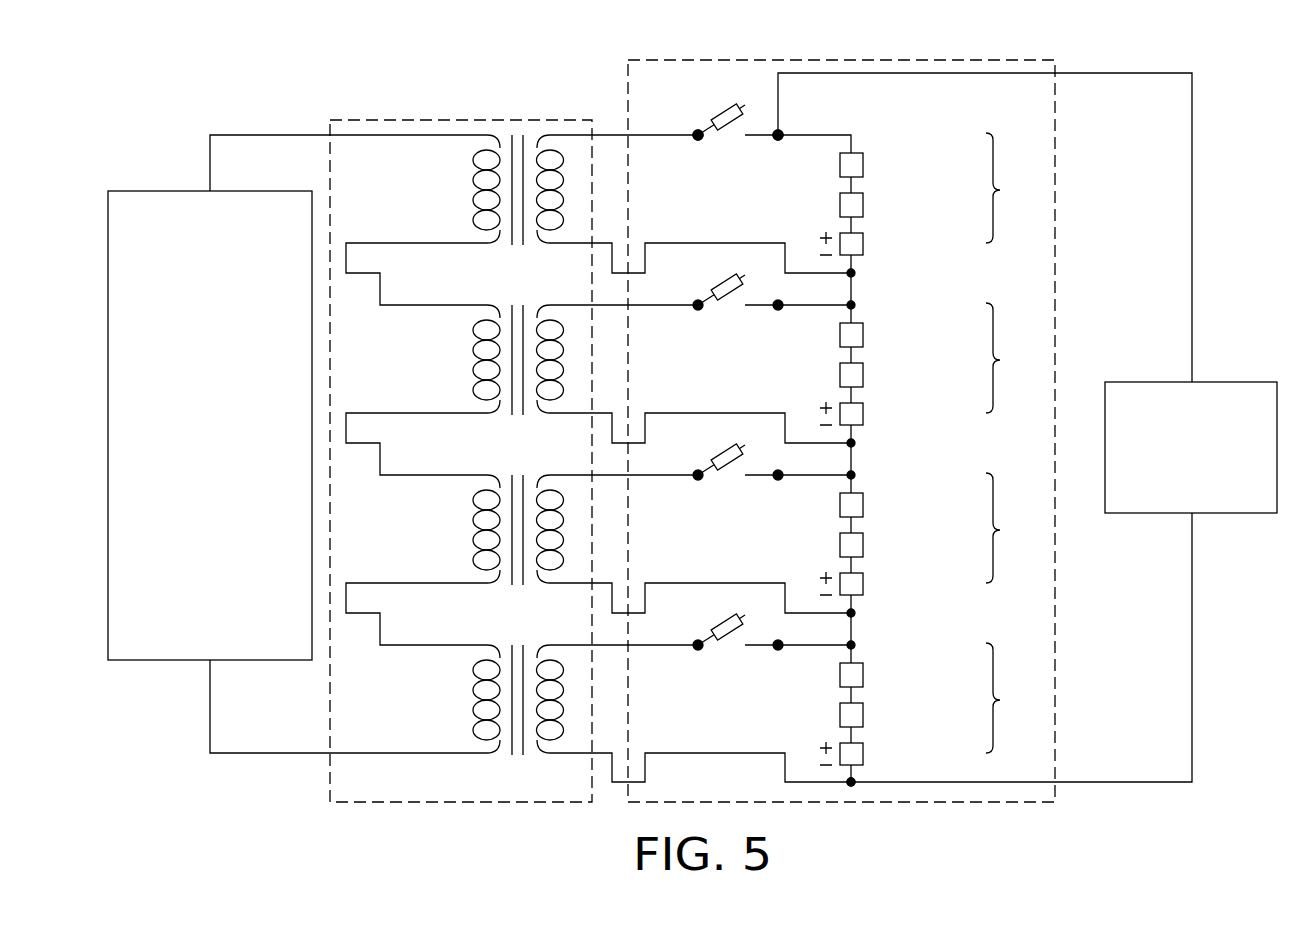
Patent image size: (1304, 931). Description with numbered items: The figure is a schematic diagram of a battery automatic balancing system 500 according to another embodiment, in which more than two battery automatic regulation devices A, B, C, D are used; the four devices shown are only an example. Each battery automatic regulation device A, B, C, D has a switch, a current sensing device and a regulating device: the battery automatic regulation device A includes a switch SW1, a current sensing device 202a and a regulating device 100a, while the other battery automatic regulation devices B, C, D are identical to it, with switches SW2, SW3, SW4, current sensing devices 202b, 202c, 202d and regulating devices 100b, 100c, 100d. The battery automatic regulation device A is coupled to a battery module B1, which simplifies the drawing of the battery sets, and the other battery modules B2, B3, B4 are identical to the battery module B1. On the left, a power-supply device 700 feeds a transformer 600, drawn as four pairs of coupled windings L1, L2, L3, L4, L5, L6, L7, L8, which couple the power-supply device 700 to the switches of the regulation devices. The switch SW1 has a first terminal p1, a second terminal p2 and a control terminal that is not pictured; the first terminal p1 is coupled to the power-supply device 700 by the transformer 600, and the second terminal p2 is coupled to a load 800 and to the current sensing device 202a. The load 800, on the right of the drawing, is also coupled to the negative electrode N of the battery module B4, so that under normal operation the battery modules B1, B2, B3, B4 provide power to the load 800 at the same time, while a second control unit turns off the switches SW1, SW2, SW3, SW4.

The power-supply device 700 is at (108, 193).
The load 800 is at (1105, 384).
The transformer 600 is at (330, 122).
The battery automatic balancing system 500 is at (628, 62).
The transformer winding L1 is at (481, 207).
The transformer winding L2 is at (555, 207).
The transformer winding L3 is at (481, 377).
The transformer winding L4 is at (555, 377).
The transformer winding L5 is at (481, 547).
The transformer winding L6 is at (555, 547).
The transformer winding L7 is at (481, 717).
The transformer winding L8 is at (555, 717).
The switch SW1 is at (730, 130).
The switch SW2 is at (730, 300).
The switch SW3 is at (730, 470).
The switch SW4 is at (730, 640).
The first terminal p1 is at (697, 130).
The second terminal p2 is at (780, 132).
The current sensing device 202a is at (863, 165).
The current sensing device 202b is at (863, 335).
The current sensing device 202c is at (863, 505).
The current sensing device 202d is at (863, 675).
The regulating device 100a is at (863, 205).
The regulating device 100b is at (863, 375).
The regulating device 100c is at (863, 545).
The regulating device 100d is at (863, 715).
The battery module B1 is at (863, 244).
The battery module B2 is at (863, 414).
The battery module B3 is at (863, 584).
The battery module B4 is at (863, 754).
The battery automatic regulation device A is at (1004, 188).
The battery automatic regulation device B is at (1004, 358).
The battery automatic regulation device C is at (1004, 528).
The battery automatic regulation device D is at (1005, 698).
The negative electrode N is at (851, 788).